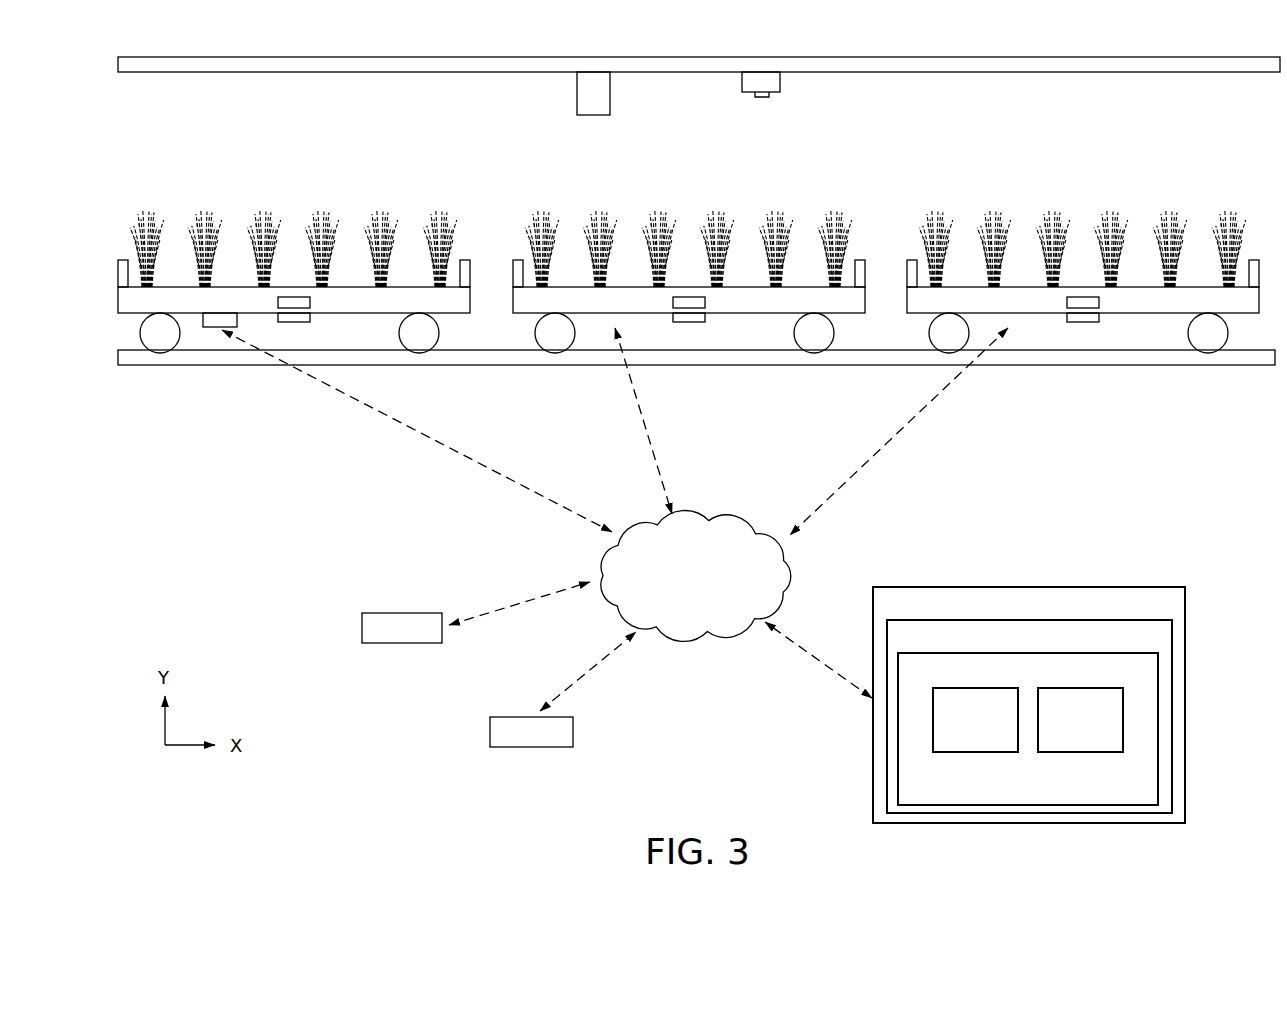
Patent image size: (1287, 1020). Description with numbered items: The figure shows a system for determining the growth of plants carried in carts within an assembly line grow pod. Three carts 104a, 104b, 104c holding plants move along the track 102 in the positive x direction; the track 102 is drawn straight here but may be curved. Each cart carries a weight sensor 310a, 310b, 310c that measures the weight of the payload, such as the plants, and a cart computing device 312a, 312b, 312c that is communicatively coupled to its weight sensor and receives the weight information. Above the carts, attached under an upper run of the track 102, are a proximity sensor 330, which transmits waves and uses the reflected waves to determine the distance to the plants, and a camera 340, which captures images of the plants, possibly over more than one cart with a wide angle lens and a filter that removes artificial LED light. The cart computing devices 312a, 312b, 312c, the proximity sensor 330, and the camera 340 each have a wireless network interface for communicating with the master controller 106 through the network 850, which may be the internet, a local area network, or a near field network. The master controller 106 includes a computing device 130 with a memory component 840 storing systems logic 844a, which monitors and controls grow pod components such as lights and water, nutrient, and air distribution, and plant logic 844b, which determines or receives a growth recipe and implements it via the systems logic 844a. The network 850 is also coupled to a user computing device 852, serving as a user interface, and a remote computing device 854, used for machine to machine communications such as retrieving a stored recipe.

The track 102 is at (163, 73).
The cart 104a is at (1051, 292).
The cart 104b is at (657, 292).
The cart 104c is at (247, 301).
The master controller 106 is at (1064, 700).
The computing device 130 is at (1071, 715).
The weight sensor 310a is at (1110, 296).
The weight sensor 310b is at (715, 296).
The weight sensor 310c is at (320, 296).
The cart computing device 312a is at (1085, 327).
The cart computing device 312b is at (692, 327).
The cart computing device 312c is at (290, 327).
The proximity sensor 330 is at (565, 86).
The camera 340 is at (788, 87).
The memory component 840 is at (1076, 729).
The systems logic 844a is at (975, 752).
The plant logic 844b is at (1080, 752).
The network 850 is at (676, 585).
The user computing device 852 is at (398, 643).
The remote computing device 854 is at (528, 747).